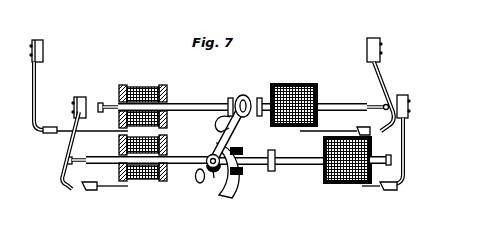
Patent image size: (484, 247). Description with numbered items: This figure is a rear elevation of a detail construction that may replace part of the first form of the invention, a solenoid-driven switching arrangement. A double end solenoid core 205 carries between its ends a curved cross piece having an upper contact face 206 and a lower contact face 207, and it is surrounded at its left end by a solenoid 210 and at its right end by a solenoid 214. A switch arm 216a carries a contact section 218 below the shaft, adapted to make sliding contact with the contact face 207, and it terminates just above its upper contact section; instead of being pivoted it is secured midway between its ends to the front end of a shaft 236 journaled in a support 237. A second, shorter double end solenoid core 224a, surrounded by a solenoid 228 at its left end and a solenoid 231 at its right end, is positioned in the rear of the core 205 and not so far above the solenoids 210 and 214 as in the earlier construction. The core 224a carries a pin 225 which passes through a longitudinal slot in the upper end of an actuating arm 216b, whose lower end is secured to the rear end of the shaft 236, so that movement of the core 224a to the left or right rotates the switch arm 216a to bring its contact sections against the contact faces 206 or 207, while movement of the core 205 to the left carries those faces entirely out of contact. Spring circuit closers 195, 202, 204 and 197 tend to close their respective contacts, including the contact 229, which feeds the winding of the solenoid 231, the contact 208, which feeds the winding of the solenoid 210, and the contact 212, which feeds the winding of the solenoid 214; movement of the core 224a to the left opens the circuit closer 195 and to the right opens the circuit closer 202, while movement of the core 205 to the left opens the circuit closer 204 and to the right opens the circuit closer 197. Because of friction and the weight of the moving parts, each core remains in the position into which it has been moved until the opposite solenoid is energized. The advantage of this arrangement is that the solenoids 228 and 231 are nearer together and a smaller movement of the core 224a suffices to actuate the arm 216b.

The spring circuit closer 202 is at (36, 84).
The contact 229 is at (50, 128).
The spring circuit closer 197 is at (64, 150).
The contact 212 is at (91, 191).
The solenoid 231 is at (143, 84).
The solenoid 214 is at (138, 181).
The double end solenoid core 224a is at (191, 104).
The pin 225 is at (246, 96).
The solenoid 228 is at (300, 85).
The spring circuit closer 195 is at (388, 78).
The spring circuit closer 204 is at (408, 145).
The contact 208 is at (386, 191).
The solenoid 210 is at (346, 183).
The double end solenoid core 205 is at (292, 165).
The contact face 207 is at (233, 190).
The contact face 206 is at (239, 137).
The actuating arm 216b is at (221, 120).
The shaft 236 is at (211, 155).
The switch arm 216a is at (199, 177).
The contact section 218 is at (208, 181).
The support 237 is at (214, 178).